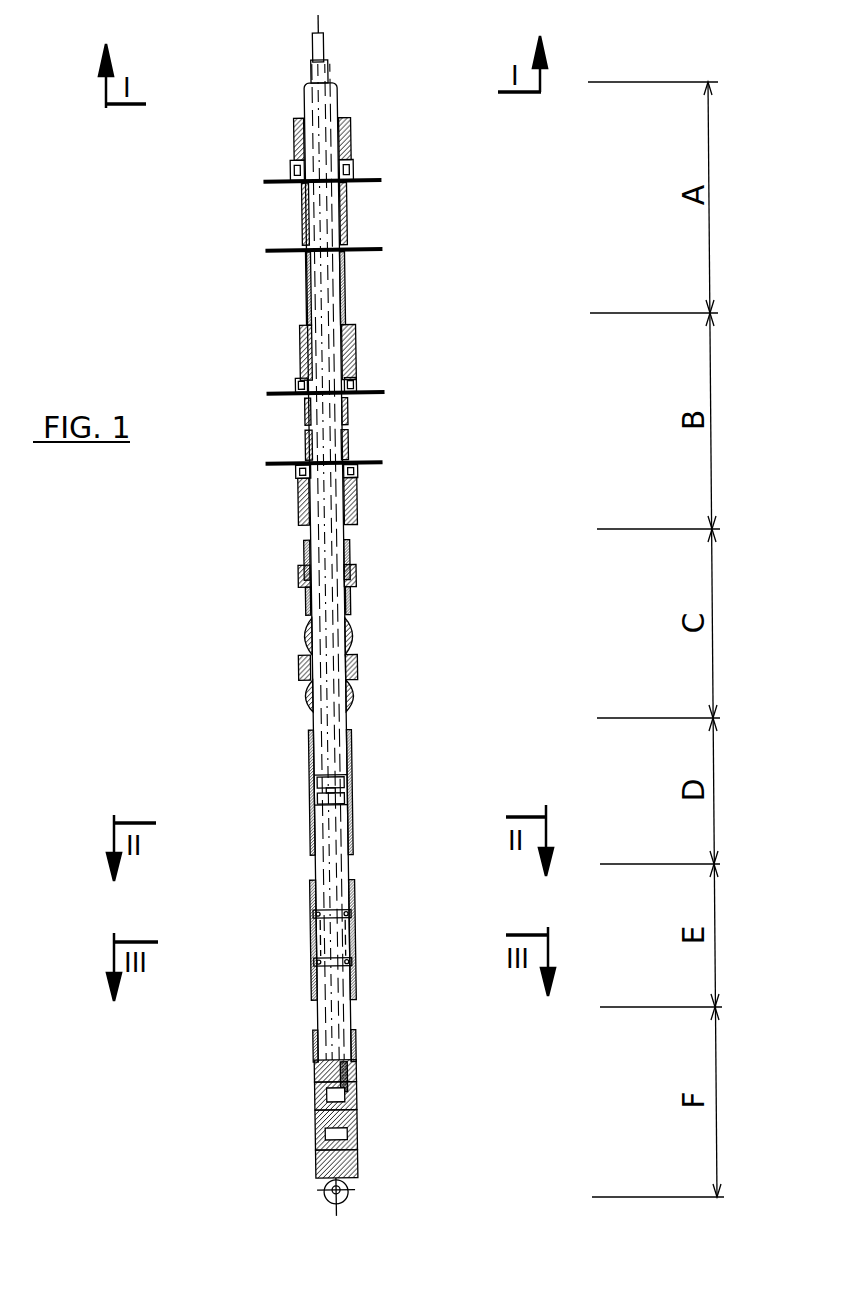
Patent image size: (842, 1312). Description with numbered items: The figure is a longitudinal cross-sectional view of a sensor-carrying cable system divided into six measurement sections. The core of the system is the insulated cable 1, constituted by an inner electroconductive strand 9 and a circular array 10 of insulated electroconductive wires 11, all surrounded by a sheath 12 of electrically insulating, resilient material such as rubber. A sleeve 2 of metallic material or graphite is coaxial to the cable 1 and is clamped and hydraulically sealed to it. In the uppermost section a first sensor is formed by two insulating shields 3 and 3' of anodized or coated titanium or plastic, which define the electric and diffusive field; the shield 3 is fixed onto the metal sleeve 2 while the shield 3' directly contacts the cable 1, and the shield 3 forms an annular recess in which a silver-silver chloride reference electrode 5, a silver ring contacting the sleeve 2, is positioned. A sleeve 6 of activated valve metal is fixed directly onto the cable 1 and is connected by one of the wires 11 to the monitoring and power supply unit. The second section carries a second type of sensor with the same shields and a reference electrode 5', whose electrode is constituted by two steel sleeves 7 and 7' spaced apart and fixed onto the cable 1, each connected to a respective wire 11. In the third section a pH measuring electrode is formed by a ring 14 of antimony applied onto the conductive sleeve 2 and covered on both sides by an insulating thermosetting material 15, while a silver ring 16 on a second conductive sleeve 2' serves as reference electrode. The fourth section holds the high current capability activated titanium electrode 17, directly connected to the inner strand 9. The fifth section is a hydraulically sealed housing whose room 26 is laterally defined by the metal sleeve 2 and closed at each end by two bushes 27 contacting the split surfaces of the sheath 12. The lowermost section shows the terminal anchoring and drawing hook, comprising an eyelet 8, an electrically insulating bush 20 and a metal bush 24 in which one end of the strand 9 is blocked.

The insulated cable 1 is at (300, 97).
The sleeve 2 is at (325, 590).
The second conductive sleeve 2' is at (277, 556).
The insulating shield 3 is at (351, 320).
The insulating shield 3' is at (357, 245).
The reference electrode 5 is at (366, 264).
The reference electrode 5' is at (373, 486).
The sleeve 6 is at (302, 215).
The steel sleeve 7 is at (277, 407).
The steel sleeve 7' is at (275, 447).
The eyelet 8 is at (358, 1175).
The inner electroconductive strand 9 is at (325, 42).
The circular array of insulated electroconductive wires 10 is at (312, 74).
The insulated electroconductive wires 11 is at (330, 62).
The sheath 12 is at (332, 97).
The ring 14 is at (360, 665).
The insulating thermosetting material 15 is at (357, 635).
The silver ring 16 is at (359, 576).
The high current capability activated titanium electrode 17 is at (354, 752).
The bush 20 is at (357, 1135).
The metal bush 24 is at (357, 1100).
The room 26 is at (345, 943).
The bushes 27 is at (348, 916).